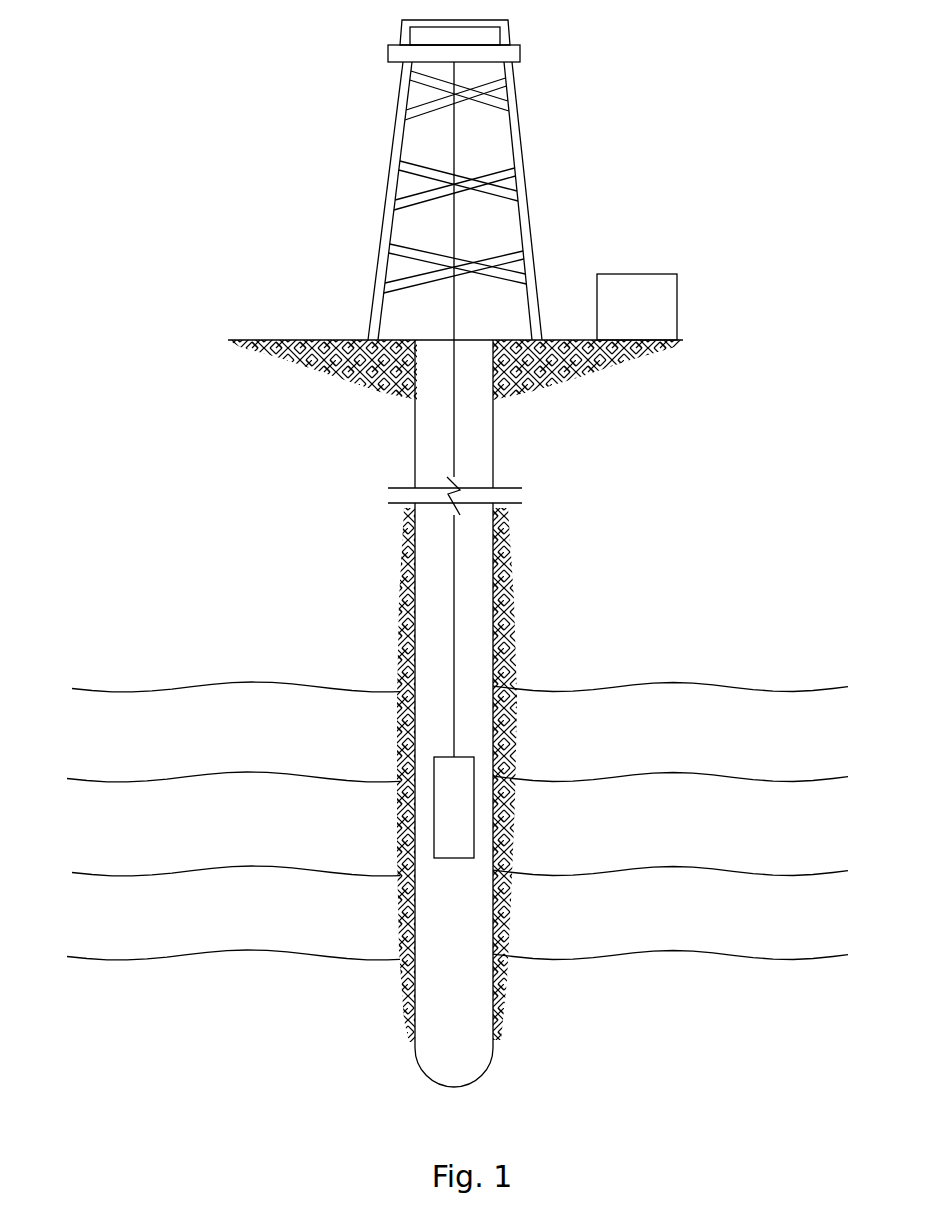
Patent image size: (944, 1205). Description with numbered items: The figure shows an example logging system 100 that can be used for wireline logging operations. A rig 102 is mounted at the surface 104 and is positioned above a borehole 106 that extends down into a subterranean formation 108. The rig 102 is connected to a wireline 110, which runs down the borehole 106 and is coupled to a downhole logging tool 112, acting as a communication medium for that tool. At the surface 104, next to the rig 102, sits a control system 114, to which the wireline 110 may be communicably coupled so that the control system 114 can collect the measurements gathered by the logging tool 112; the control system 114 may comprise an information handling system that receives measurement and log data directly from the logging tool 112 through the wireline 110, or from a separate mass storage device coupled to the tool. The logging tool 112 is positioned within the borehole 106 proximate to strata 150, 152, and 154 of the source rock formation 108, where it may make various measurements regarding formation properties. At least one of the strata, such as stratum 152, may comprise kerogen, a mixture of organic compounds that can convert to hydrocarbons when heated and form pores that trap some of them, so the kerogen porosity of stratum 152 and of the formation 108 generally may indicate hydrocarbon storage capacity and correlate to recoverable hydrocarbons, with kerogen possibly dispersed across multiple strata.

The logging system 100 is at (721, 53).
The rig 102 is at (530, 228).
The surface 104 is at (333, 337).
The borehole 106 is at (496, 453).
The subterranean formation 108 is at (662, 552).
The wireline 110 is at (452, 231).
The downhole logging tool 112 is at (476, 813).
The control system 114 is at (619, 316).
The stratum 150 is at (750, 745).
The stratum 152 is at (750, 835).
The stratum 154 is at (750, 926).